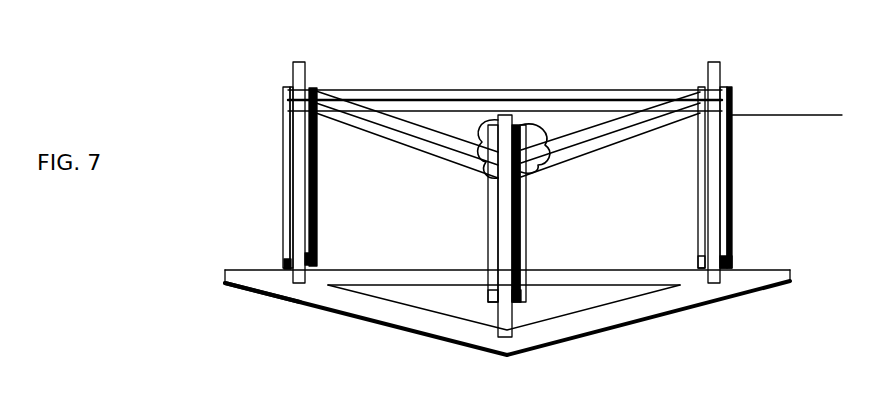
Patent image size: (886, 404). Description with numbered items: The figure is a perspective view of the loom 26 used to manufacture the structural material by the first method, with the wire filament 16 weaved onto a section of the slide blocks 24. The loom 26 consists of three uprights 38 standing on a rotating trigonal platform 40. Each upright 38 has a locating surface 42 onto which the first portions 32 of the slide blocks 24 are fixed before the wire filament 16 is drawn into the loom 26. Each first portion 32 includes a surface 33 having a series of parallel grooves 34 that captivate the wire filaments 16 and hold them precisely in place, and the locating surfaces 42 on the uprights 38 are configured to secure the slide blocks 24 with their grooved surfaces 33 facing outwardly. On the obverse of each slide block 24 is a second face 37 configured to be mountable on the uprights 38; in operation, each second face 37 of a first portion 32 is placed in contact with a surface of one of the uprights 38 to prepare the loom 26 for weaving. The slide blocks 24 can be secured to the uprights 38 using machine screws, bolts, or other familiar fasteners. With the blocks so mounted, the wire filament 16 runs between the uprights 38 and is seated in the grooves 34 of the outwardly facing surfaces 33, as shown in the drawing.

The wire filament 16 is at (797, 97).
The slide block 24 is at (276, 195).
The loom 26 is at (382, 342).
The first portion 32 is at (276, 232).
The surface 33 is at (287, 257).
The parallel grooves 34 is at (488, 127).
The second face 37 is at (297, 268).
The upright 38 is at (303, 60).
The rotating trigonal platform 40 is at (247, 283).
The locating surface 42 is at (296, 137).